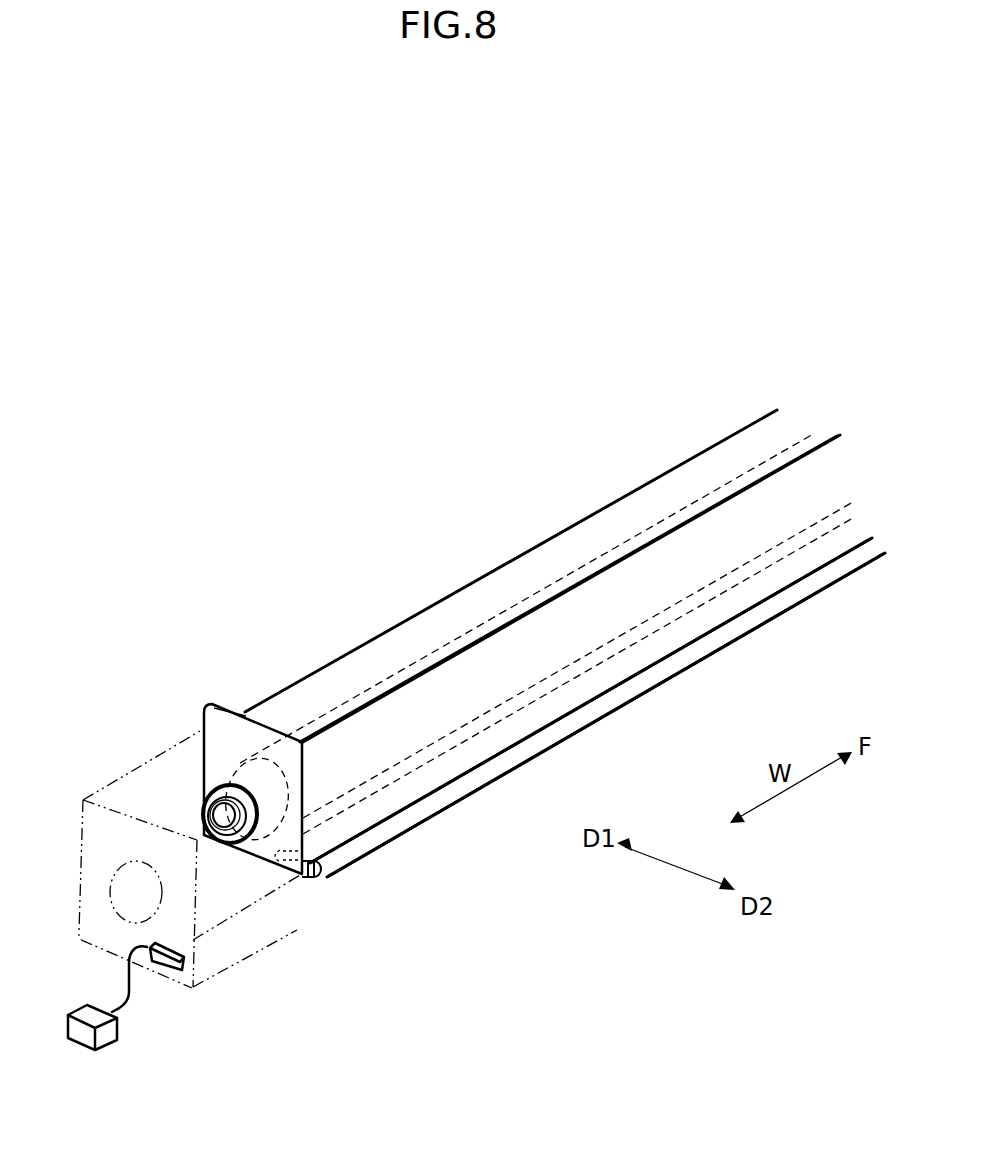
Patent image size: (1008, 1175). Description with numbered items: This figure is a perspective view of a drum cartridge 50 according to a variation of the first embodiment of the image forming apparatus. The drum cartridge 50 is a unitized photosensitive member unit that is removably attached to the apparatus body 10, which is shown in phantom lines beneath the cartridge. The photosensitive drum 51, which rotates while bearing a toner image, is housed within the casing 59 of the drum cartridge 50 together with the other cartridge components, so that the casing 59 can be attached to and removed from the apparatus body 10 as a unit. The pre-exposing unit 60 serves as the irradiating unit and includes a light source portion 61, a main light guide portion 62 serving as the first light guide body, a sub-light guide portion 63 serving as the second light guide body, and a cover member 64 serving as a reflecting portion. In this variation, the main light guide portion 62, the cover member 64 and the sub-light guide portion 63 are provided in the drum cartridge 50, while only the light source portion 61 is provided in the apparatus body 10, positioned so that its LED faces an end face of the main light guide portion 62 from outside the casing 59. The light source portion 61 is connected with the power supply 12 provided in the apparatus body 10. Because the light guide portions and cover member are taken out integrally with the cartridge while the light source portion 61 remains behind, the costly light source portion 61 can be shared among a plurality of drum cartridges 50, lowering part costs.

The apparatus body 10 is at (88, 759).
The power supply 12 is at (108, 1033).
The drum cartridge 50 is at (518, 482).
The photosensitive drum 51 is at (452, 650).
The casing 59 is at (700, 467).
The pre-exposing unit 60 is at (394, 918).
The light source portion 61 is at (173, 965).
The main light guide portion 62 is at (317, 870).
The sub-light guide portion 63 is at (448, 769).
The cover member 64 is at (400, 825).